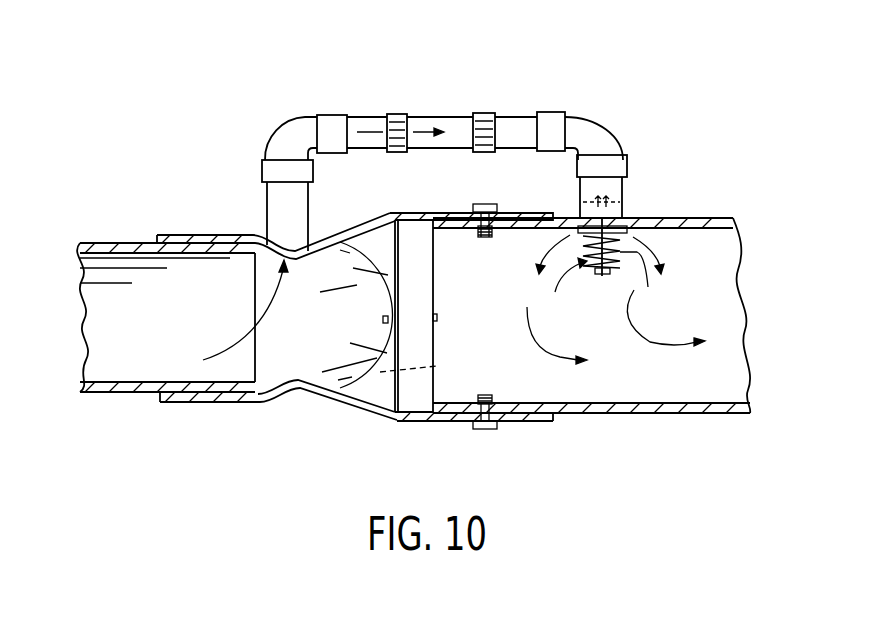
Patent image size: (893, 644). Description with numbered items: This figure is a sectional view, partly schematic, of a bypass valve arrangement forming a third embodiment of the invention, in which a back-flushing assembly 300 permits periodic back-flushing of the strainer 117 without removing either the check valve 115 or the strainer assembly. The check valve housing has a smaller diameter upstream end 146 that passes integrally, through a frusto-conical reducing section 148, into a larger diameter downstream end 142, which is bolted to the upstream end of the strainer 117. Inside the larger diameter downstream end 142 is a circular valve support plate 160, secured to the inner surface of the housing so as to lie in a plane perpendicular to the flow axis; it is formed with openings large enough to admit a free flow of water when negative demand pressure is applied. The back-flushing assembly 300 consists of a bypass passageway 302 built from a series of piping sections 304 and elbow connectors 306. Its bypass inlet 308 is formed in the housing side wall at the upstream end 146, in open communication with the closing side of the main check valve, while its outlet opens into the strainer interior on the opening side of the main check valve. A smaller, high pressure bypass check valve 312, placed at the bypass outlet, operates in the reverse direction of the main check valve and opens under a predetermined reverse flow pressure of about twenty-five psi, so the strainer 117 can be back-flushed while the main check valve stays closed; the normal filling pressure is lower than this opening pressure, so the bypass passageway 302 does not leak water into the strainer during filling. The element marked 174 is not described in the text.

The check valve 115 is at (296, 409).
The strainer 117 is at (595, 415).
The larger diameter downstream end 142 is at (440, 420).
The smaller diameter upstream end 146 is at (222, 402).
The frusto-conical reducing section 148 is at (353, 408).
The valve support plate 160 is at (418, 305).
The hinge 174 is at (400, 387).
The back-flushing assembly 300 is at (476, 92).
The bypass passageway 302 is at (417, 137).
The piping sections 304 is at (507, 138).
The elbow connectors 306 is at (585, 137).
The bypass inlet 308 is at (303, 257).
The bypass check valve 312 is at (595, 276).